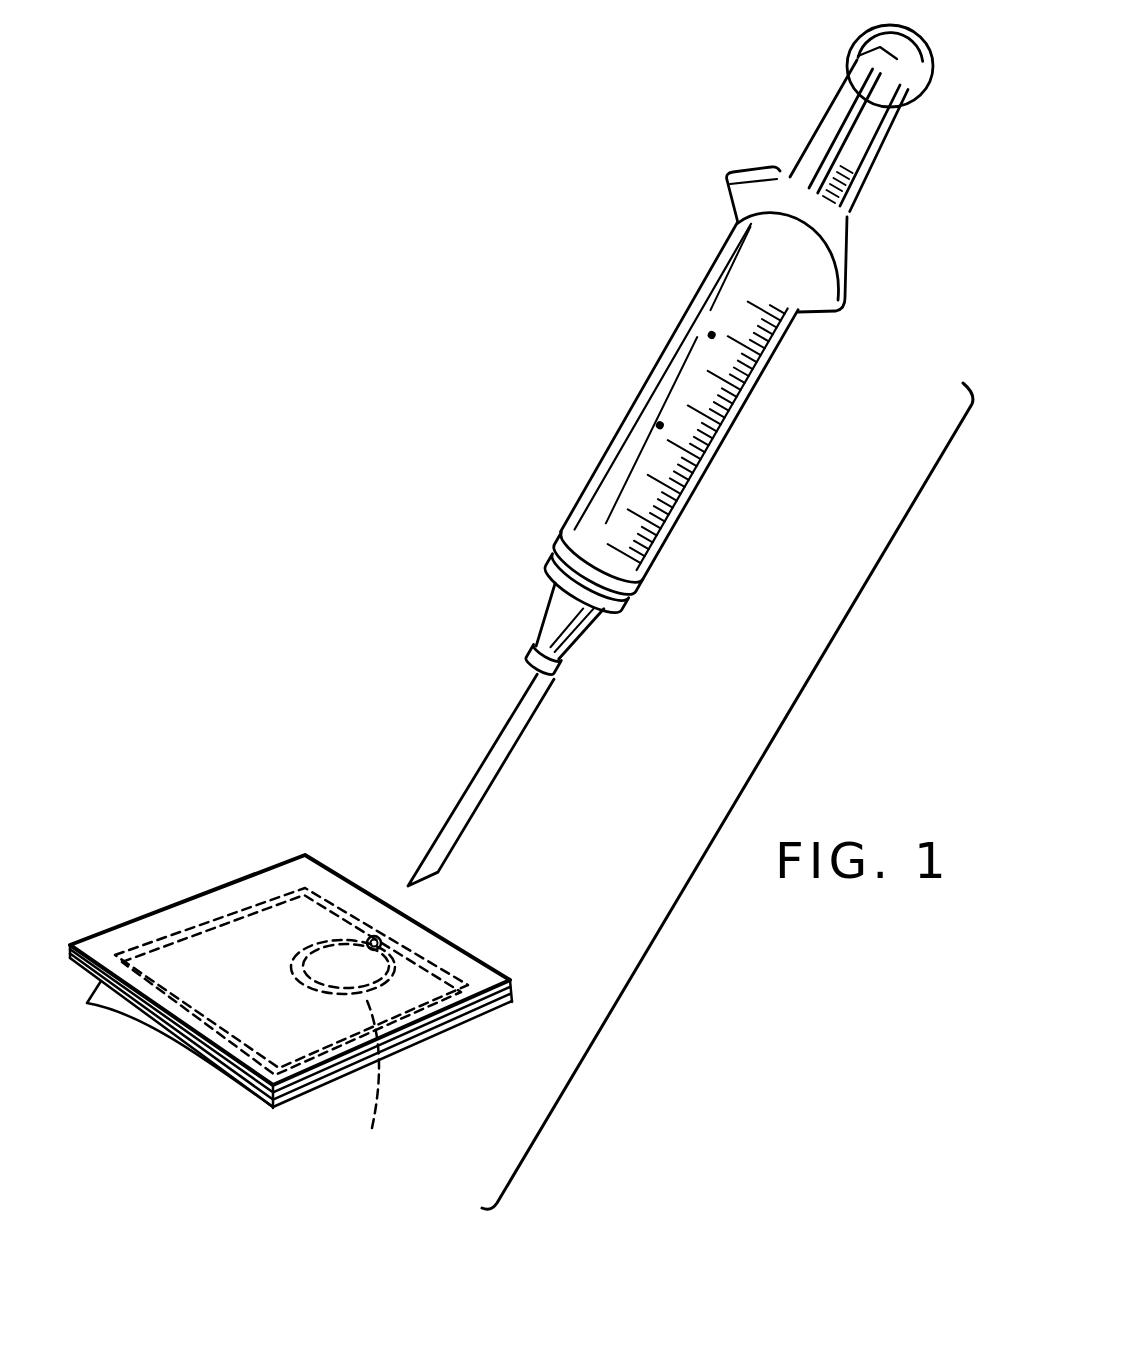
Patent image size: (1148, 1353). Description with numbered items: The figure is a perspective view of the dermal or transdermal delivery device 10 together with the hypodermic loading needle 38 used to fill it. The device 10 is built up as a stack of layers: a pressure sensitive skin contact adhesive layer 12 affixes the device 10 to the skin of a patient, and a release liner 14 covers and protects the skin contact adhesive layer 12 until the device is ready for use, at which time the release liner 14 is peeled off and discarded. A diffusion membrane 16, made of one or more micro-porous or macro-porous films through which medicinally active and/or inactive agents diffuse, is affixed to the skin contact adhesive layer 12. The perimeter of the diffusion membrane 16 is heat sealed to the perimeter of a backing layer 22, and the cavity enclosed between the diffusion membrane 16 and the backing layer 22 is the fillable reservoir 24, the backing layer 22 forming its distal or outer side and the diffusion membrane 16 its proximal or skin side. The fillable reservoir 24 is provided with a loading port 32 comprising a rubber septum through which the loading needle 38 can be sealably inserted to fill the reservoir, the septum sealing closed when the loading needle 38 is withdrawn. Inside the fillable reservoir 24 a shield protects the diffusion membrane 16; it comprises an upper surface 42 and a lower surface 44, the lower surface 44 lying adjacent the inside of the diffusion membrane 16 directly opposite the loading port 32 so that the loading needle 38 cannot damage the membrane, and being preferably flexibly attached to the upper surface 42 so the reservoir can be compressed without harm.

The dermal or transdermal delivery device 10 is at (343, 923).
The pressure sensitive skin contact adhesive layer 12 is at (512, 1003).
The release liner 14 is at (87, 1003).
The diffusion membrane 16 is at (517, 993).
The backing layer 22 is at (511, 982).
The fillable reservoir 24 is at (213, 960).
The loading port 32 is at (388, 940).
The loading needle 38 is at (464, 789).
The upper surface 42 is at (330, 942).
The lower surface 44 is at (383, 1081).